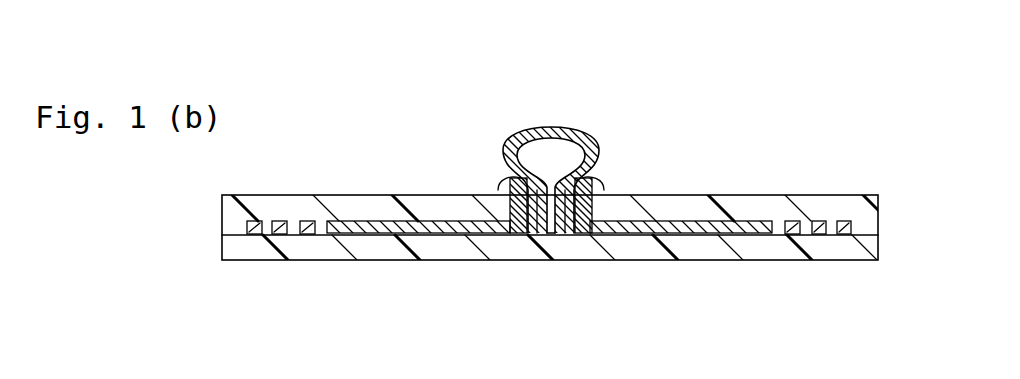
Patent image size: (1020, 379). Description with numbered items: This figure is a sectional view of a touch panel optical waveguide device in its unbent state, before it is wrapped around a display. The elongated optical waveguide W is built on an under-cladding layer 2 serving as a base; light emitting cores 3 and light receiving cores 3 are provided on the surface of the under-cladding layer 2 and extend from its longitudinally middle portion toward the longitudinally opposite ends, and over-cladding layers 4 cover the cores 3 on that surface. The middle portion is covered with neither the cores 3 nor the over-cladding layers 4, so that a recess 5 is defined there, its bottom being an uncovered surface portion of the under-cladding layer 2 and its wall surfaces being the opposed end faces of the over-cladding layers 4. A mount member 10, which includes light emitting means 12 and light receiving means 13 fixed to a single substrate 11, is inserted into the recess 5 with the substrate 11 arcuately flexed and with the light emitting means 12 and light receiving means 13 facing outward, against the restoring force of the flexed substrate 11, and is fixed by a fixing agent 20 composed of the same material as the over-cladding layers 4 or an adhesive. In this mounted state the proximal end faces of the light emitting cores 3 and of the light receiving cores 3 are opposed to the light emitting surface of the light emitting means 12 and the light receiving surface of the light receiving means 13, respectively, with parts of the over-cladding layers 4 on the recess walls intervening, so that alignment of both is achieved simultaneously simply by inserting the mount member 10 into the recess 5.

The optical waveguide W is at (845, 193).
The under-cladding layer 2 is at (316, 252).
The cores 3 is at (352, 218).
The over-cladding layers 4 is at (418, 203).
The recess 5 is at (548, 236).
The mount member 10 is at (549, 130).
The substrate 11 is at (562, 129).
The light emitting means 12 is at (595, 155).
The light receiving means 13 is at (500, 170).
The fixing agent 20 is at (499, 188).